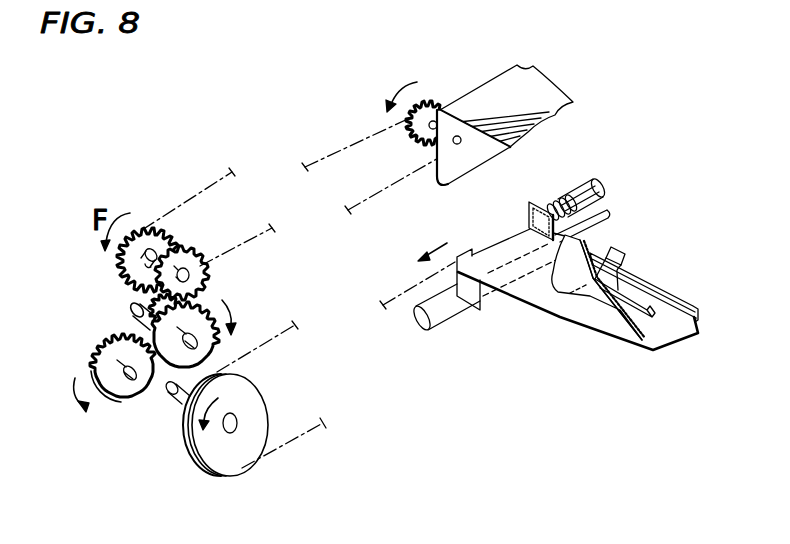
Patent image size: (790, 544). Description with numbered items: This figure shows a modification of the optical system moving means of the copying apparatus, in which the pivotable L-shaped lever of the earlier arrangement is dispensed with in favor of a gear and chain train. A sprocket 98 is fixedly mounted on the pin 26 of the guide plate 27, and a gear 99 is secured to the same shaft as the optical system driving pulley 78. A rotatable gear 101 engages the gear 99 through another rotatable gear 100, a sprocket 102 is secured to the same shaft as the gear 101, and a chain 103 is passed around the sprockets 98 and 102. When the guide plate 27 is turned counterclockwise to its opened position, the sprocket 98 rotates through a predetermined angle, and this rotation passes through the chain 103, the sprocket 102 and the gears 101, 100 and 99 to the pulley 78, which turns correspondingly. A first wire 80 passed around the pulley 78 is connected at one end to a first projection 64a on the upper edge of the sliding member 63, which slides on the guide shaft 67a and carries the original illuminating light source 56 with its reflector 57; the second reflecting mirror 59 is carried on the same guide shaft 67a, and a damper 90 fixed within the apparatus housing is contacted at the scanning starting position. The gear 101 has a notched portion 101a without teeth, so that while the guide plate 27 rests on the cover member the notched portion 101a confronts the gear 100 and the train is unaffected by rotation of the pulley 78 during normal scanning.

The sprocket 102 is at (146, 237).
The rotatable gear 101 is at (187, 250).
The notched portion 101a is at (195, 295).
The rotatable gear 100 is at (220, 347).
The gear 99 is at (117, 396).
The optical system driving pulley 78 is at (238, 463).
The chain 103 is at (333, 147).
The sprocket 98 is at (433, 110).
The guide plate 27 is at (528, 85).
The pin 26 is at (462, 144).
The damper 90 is at (600, 176).
The second reflecting mirror 59 is at (673, 297).
The first projection 64a is at (466, 256).
The first wire 80 is at (400, 290).
The guide shaft 67a is at (437, 331).
The sliding member 63 is at (490, 300).
The reflector 57 is at (593, 305).
The original illuminating light source 56 is at (653, 320).